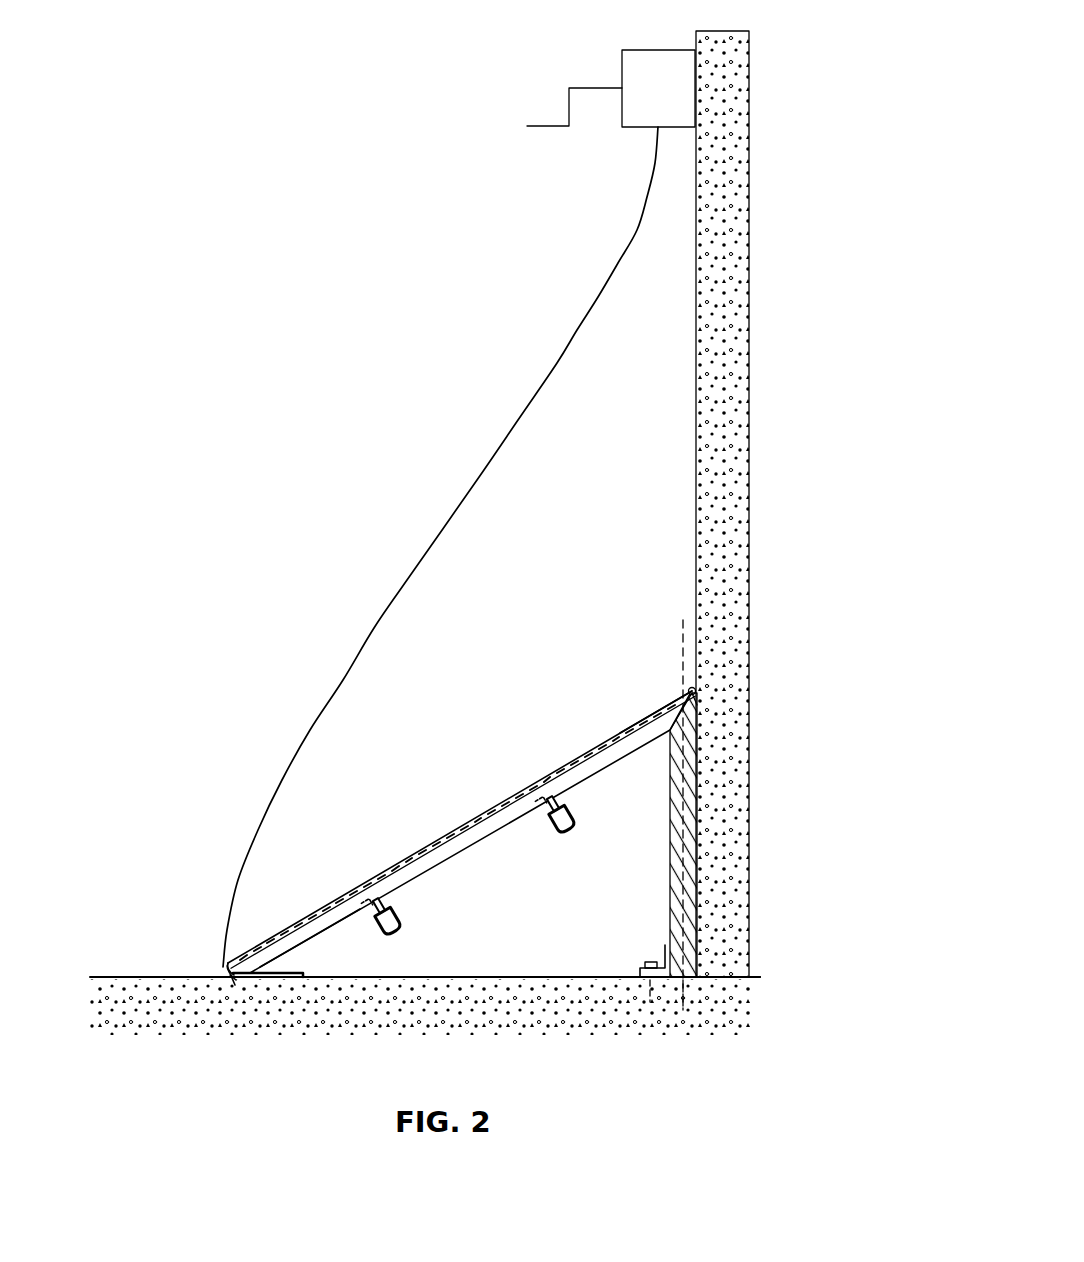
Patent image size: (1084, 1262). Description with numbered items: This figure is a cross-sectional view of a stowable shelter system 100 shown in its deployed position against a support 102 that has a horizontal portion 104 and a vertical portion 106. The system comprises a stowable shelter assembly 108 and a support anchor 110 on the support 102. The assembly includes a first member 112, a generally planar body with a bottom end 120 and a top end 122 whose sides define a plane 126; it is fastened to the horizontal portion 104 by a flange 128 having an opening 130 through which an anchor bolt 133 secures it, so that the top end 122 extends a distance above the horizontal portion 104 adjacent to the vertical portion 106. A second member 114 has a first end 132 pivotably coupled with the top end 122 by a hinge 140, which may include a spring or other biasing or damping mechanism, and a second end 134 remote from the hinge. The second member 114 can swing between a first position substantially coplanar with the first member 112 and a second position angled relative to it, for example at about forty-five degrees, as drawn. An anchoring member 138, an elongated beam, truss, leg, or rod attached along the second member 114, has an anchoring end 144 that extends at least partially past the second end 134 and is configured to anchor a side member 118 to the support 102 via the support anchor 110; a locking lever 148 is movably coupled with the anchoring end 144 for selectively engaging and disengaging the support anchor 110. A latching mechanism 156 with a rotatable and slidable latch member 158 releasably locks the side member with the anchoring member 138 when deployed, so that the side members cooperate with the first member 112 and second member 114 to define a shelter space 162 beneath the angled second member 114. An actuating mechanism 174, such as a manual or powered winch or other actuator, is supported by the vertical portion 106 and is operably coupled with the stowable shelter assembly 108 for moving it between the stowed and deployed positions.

The stowable shelter system 100 is at (214, 165).
The support 102 is at (766, 972).
The horizontal portion 104 is at (520, 980).
The vertical portion 106 is at (752, 386).
The stowable shelter assembly 108 is at (506, 800).
The support anchor 110 is at (222, 978).
The first member 112 is at (695, 876).
The second member 114 is at (372, 888).
The side member 118 is at (586, 894).
The bottom end 120 is at (665, 980).
The top end 122 is at (698, 713).
The plane 126 is at (681, 648).
The flange 128 is at (652, 964).
The opening 130 is at (641, 967).
The first end 132 is at (650, 718).
The anchor bolt 133 is at (660, 978).
The second end 134 is at (226, 966).
The anchoring member 138 is at (310, 945).
The hinge 140 is at (697, 690).
The anchoring end 144 is at (230, 980).
The locking lever 148 is at (289, 978).
The latching mechanism 156 is at (392, 942).
The latch member 158 is at (388, 920).
The shelter space 162 is at (482, 976).
The actuating mechanism 174 is at (638, 50).